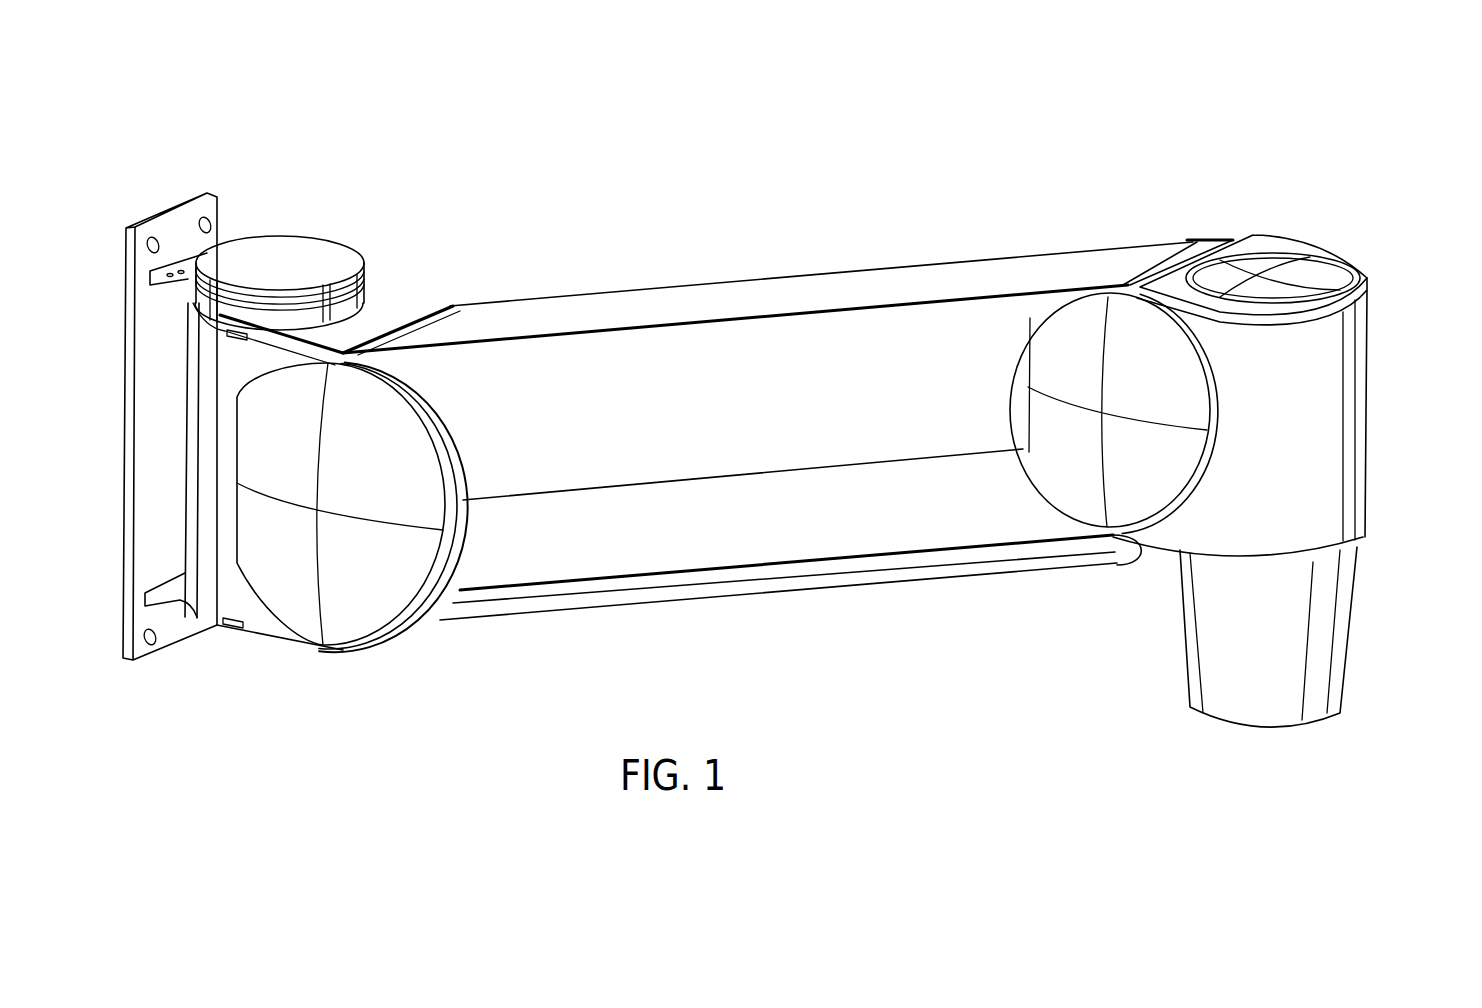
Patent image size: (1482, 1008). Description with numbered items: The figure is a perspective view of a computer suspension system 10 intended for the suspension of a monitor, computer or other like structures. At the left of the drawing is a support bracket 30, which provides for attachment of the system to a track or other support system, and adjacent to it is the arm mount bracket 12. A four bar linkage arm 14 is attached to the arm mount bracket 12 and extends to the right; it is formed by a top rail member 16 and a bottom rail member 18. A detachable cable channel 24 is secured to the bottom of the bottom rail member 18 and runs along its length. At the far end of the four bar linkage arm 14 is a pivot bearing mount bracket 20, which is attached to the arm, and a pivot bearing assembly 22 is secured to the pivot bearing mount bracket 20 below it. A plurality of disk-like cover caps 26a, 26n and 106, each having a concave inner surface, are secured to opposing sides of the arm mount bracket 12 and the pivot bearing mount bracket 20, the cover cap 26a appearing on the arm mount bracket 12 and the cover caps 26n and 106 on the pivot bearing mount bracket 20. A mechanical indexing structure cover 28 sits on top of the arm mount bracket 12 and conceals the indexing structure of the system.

The computer suspension system 10 is at (243, 113).
The arm mount bracket 12 is at (438, 268).
The four bar linkage arm 14 is at (732, 252).
The top rail member 16 is at (773, 348).
The bottom rail member 18 is at (887, 527).
The pivot bearing mount bracket 20 is at (1400, 314).
The pivot bearing assembly 22 is at (1370, 631).
The detachable cable channel 24 is at (983, 567).
The disk-like cover cap 26a is at (343, 623).
The disk-like cover cap 26n is at (1090, 323).
The mechanical indexing structure cover 28 is at (298, 233).
The support bracket 30 is at (161, 682).
The disk-like cover cap 106 is at (1327, 272).